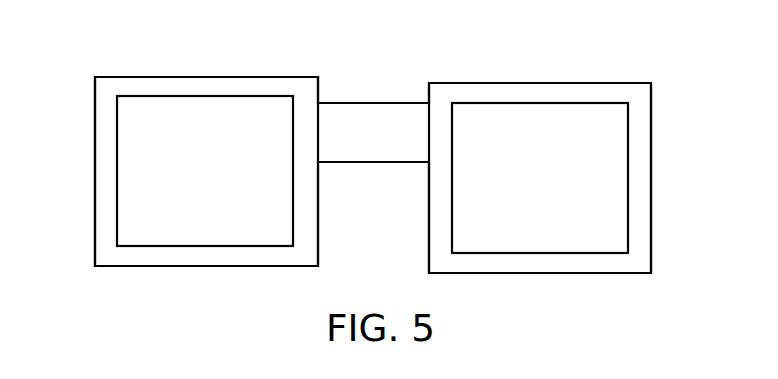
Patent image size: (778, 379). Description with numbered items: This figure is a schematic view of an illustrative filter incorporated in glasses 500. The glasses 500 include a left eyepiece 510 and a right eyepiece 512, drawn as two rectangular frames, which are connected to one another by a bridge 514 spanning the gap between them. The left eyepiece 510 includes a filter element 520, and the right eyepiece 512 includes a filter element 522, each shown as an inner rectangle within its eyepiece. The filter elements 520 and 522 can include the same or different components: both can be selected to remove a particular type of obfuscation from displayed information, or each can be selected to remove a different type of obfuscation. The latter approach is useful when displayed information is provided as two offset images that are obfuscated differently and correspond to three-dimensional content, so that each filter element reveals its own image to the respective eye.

The glasses 500 is at (198, 66).
The left eyepiece 510 is at (105, 88).
The right eyepiece 512 is at (640, 99).
The bridge 514 is at (384, 125).
The filter element 520 is at (133, 163).
The filter element 522 is at (613, 172).